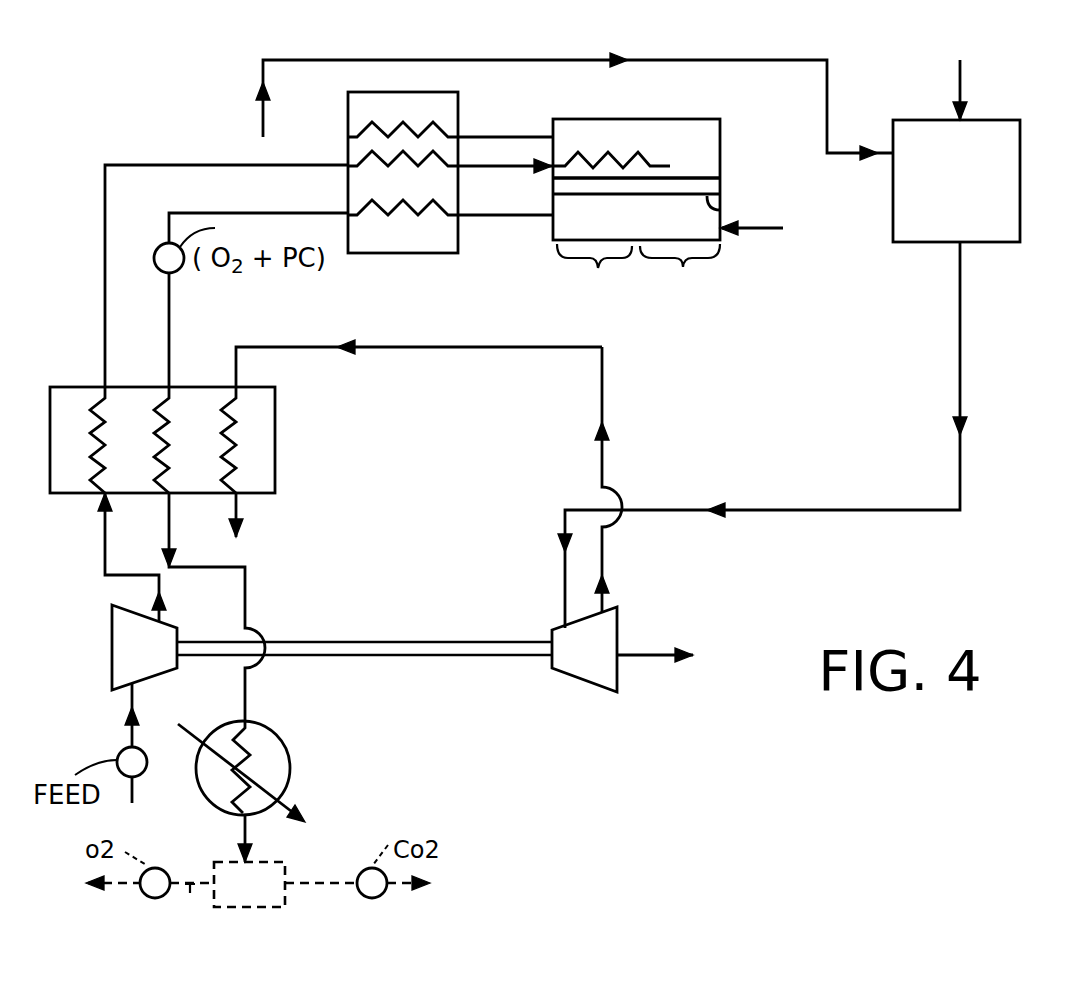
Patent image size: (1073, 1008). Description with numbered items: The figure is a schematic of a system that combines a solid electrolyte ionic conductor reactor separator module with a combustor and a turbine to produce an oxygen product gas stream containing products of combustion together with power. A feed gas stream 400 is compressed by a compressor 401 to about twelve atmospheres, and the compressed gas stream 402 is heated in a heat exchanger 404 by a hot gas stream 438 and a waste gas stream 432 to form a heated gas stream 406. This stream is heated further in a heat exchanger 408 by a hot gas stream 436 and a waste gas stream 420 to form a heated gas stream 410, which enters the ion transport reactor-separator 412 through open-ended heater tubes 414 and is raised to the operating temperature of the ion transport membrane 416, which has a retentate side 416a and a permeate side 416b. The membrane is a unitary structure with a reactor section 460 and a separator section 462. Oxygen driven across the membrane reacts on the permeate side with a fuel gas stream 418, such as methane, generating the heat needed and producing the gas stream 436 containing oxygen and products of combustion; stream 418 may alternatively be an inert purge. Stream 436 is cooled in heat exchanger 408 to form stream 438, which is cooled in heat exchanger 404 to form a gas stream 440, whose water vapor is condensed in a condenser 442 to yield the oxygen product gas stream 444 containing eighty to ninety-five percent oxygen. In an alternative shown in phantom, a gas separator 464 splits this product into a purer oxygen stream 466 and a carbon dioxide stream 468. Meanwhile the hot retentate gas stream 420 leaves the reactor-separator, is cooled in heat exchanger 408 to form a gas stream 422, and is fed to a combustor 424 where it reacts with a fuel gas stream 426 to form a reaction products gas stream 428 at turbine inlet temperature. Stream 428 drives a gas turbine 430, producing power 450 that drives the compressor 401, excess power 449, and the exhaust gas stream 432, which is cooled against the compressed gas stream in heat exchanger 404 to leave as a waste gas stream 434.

The feed gas stream 400 is at (127, 737).
The compressor 401 is at (110, 647).
The compressed gas stream 402 is at (105, 532).
The heat exchanger 404 is at (277, 447).
The heated gas stream 406 is at (105, 277).
The heat exchanger 408 is at (422, 255).
The heated gas stream 410 is at (473, 170).
The ion transport reactor-separator 412 is at (698, 119).
The open-ended heater tubes 414 is at (580, 155).
The ion transport membrane 416 is at (720, 186).
The retentate side 416a is at (697, 178).
The permeate side 416b is at (720, 210).
The fuel gas stream 418 is at (770, 232).
The hot retentate gas stream 420 is at (508, 137).
The gas stream 422 is at (803, 61).
The combustor 424 is at (990, 120).
The fuel gas stream 426 is at (957, 92).
The reaction products gas stream 428 is at (962, 327).
The gas turbine 430 is at (617, 611).
The exhaust gas stream 432 is at (603, 413).
The waste gas stream 434 is at (238, 507).
The gas stream 436 is at (476, 218).
The hot gas stream 438 is at (170, 345).
The gas stream 440 is at (247, 580).
The condenser 442 is at (293, 770).
The oxygen product gas stream 444 is at (243, 830).
The excess power 449 is at (643, 657).
The power 450 is at (485, 641).
The reactor section 460 is at (680, 277).
The separator section 462 is at (593, 277).
The gas separator 464 is at (249, 884).
The oxygen stream 466 is at (192, 893).
The carbon dioxide stream 468 is at (313, 887).